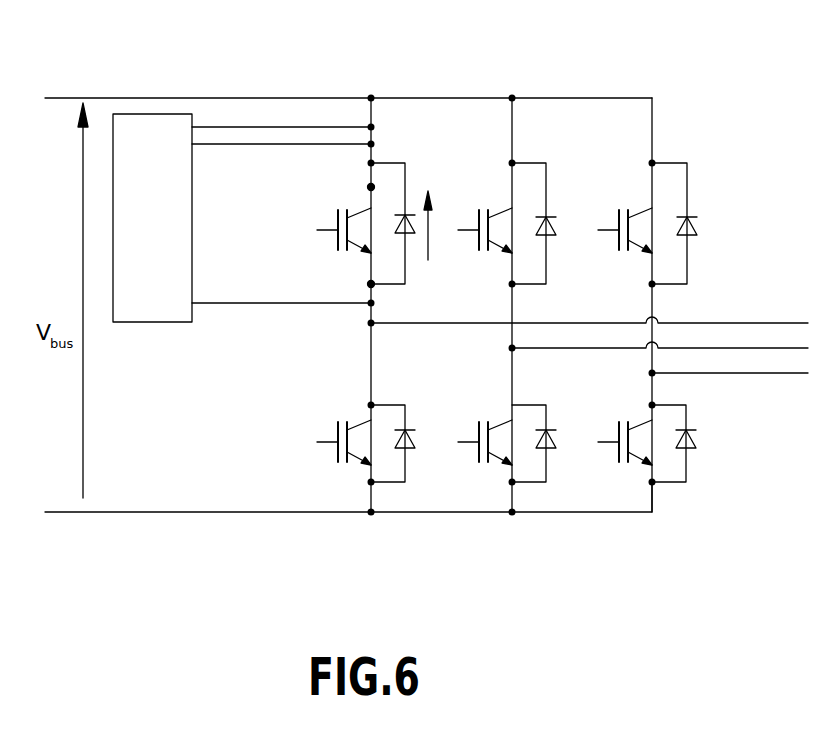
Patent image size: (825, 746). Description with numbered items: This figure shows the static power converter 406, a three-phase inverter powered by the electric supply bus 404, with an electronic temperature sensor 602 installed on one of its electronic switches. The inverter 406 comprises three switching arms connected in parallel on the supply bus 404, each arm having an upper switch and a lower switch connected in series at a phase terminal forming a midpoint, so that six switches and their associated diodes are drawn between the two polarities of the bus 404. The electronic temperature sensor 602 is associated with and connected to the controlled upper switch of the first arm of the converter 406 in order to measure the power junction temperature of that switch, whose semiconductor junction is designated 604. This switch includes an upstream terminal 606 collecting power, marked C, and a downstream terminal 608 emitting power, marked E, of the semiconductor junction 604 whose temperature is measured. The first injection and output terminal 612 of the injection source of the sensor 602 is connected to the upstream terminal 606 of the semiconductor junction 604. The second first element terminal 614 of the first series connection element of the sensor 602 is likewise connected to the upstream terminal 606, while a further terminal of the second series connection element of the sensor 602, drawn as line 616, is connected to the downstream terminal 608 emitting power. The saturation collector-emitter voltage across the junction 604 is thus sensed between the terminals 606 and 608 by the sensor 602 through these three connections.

The electric supply bus 404 is at (70, 98).
The static power converter 406 is at (523, 270).
The electronic temperature sensor 602 is at (152, 218).
The switch T1 / semiconductor junction 604 is at (320, 205).
The upstream terminal collecting power C 606 is at (371, 187).
The downstream terminal emitting power E 608 is at (371, 284).
The first injection and output terminal 612 is at (193, 127).
The second first element terminal 614 is at (197, 146).
The emitter sense line 616 is at (192, 304).